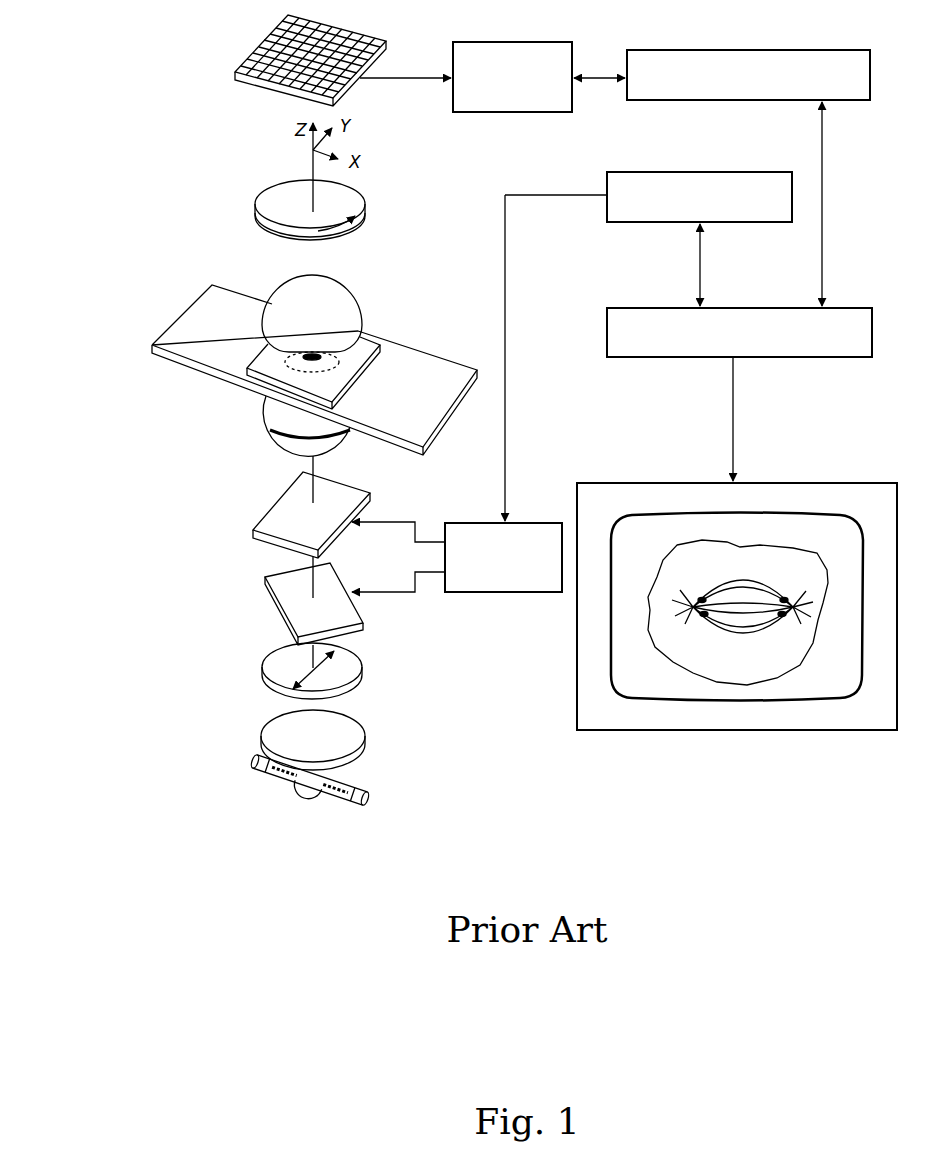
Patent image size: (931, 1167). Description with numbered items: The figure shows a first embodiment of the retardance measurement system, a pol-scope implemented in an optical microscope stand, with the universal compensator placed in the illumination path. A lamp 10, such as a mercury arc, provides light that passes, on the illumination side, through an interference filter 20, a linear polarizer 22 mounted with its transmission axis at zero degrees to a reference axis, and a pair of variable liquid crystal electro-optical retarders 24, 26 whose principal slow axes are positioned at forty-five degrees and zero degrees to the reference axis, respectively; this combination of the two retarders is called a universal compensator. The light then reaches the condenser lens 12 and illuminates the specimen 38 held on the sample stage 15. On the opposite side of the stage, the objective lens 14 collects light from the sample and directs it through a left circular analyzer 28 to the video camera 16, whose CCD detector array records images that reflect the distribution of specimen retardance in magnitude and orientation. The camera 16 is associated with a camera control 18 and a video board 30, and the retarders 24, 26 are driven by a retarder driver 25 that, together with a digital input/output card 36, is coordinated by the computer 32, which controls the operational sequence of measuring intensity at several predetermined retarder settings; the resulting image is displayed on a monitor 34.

The lamp 10 is at (290, 784).
The condenser lens 12 is at (275, 434).
The objective lens 14 is at (277, 317).
The sample stage 15 is at (413, 426).
The video camera 16 is at (240, 60).
The camera control 18 is at (512, 42).
The interference filter 20 is at (287, 738).
The linear polarizer 22 is at (283, 668).
The variable retarder 24 is at (263, 600).
The retarder driver 25 is at (476, 523).
The variable retarder 26 is at (256, 532).
The left circular analyzer 28 is at (265, 215).
The video board 30 is at (735, 50).
The computer 32 is at (650, 308).
The monitor 34 is at (813, 483).
The digital I/O card 36 is at (690, 172).
The specimen 38 is at (265, 362).